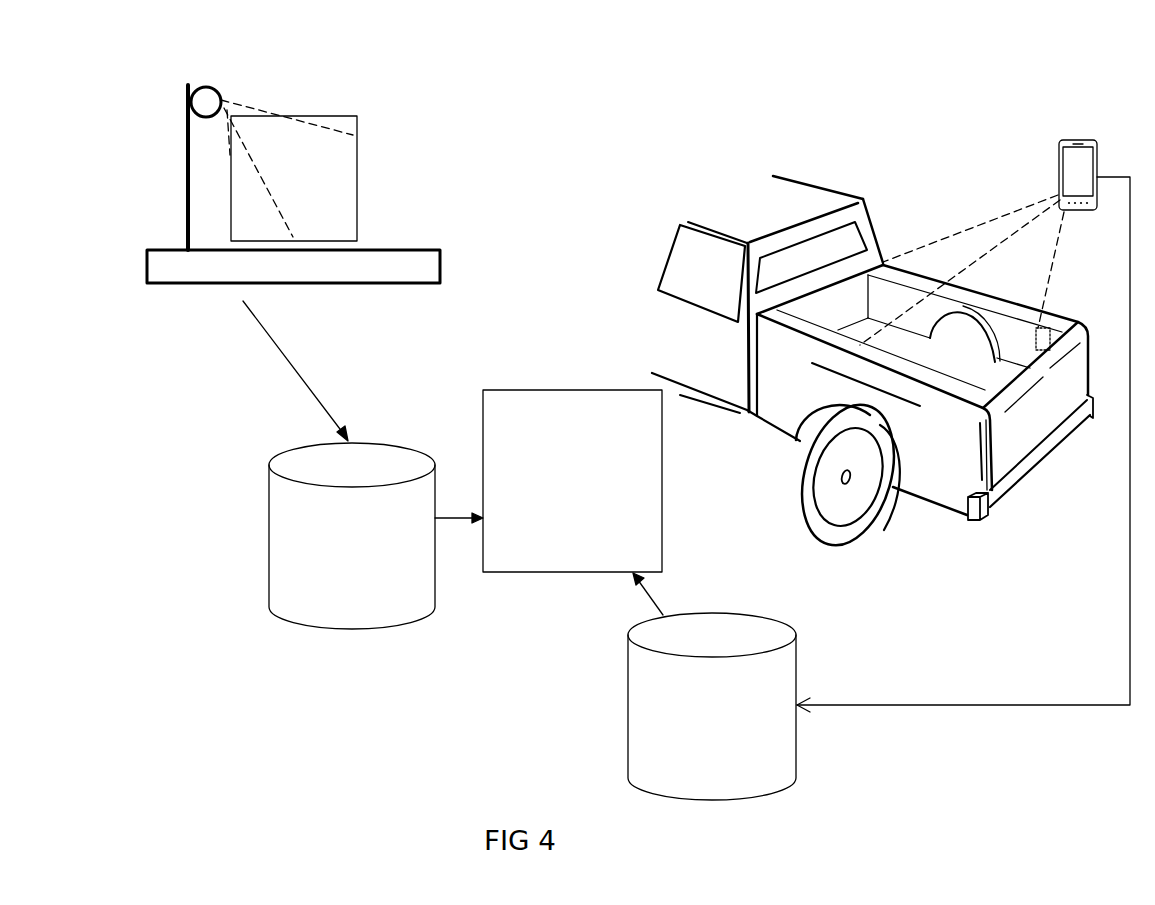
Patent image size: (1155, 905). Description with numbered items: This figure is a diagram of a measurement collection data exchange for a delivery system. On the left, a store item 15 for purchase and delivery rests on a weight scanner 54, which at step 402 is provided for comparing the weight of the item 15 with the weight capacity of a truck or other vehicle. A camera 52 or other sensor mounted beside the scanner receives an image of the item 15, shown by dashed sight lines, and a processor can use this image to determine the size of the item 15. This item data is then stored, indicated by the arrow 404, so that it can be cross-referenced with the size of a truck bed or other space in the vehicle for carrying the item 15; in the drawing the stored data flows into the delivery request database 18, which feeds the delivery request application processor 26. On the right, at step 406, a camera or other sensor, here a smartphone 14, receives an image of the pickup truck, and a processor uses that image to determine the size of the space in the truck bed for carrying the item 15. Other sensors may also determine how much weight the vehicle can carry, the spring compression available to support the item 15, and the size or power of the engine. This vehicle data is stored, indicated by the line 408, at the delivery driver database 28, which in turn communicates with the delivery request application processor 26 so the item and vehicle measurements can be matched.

The smartphone 14 is at (1053, 177).
The store item 15 is at (312, 207).
The delivery request database 18 is at (342, 617).
The delivery request application processor 26 is at (526, 561).
The delivery driver database 28 is at (687, 781).
The camera 52 is at (218, 95).
The weight scanner 54 is at (440, 283).
The weight scanning step 402 is at (290, 113).
The item data storing step 404 is at (317, 375).
The vehicle imaging step 406 is at (1053, 265).
The vehicle data storing step 408 is at (1123, 530).